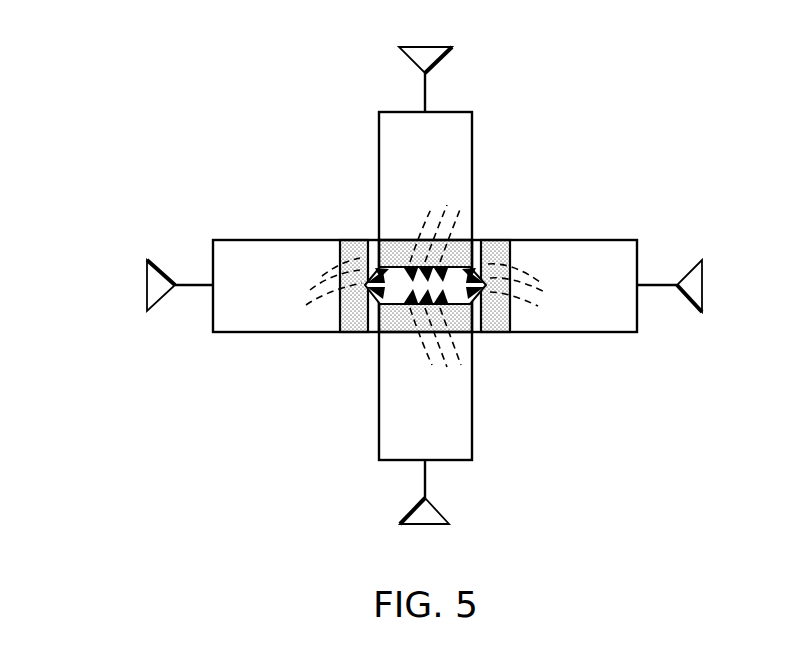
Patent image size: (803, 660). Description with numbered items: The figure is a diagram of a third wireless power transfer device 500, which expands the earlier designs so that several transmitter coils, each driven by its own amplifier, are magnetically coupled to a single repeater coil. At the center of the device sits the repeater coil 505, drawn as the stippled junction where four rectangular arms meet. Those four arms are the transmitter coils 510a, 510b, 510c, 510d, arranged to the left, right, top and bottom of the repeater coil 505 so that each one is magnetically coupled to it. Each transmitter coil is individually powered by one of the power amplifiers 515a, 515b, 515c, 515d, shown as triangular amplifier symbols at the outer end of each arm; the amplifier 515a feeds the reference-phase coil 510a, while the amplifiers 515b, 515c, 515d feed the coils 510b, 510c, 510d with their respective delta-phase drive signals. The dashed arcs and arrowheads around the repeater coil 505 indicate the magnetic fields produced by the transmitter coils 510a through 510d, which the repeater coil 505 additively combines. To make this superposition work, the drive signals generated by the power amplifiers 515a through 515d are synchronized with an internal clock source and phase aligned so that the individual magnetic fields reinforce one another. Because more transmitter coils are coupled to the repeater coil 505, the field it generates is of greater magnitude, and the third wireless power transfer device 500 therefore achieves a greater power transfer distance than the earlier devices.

The third wireless power transfer device 500 is at (620, 110).
The repeater coil 505 is at (483, 243).
The transmitter coil 510a is at (255, 335).
The transmitter coil 510b is at (557, 335).
The transmitter coil 510c is at (386, 192).
The transmitter coil 510d is at (386, 403).
The power amplifier 515a is at (152, 287).
The power amplifier 515b is at (697, 284).
The power amplifier 515c is at (412, 57).
The power amplifier 515d is at (432, 516).